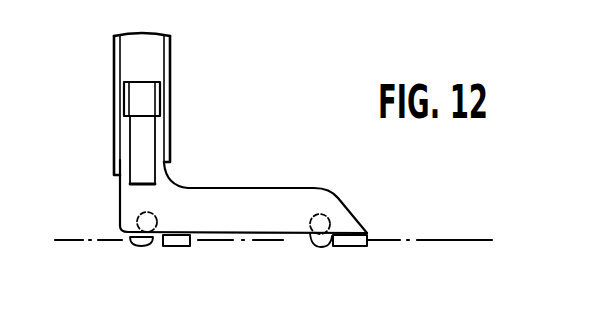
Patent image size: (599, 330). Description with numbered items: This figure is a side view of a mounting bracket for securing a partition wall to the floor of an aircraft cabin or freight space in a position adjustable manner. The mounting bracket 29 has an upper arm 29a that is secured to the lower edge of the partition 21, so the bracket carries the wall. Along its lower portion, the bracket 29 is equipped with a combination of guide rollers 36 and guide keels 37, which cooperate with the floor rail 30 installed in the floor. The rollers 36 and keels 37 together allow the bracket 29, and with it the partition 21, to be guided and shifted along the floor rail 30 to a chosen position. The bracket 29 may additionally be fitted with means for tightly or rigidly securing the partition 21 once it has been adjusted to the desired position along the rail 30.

The partition 21 is at (168, 104).
The mounting bracket 29 is at (240, 153).
The upper arm 29a is at (133, 115).
The guide rollers 36 is at (140, 243).
The guide keels 37 is at (265, 186).
The floor rail 30 is at (432, 242).